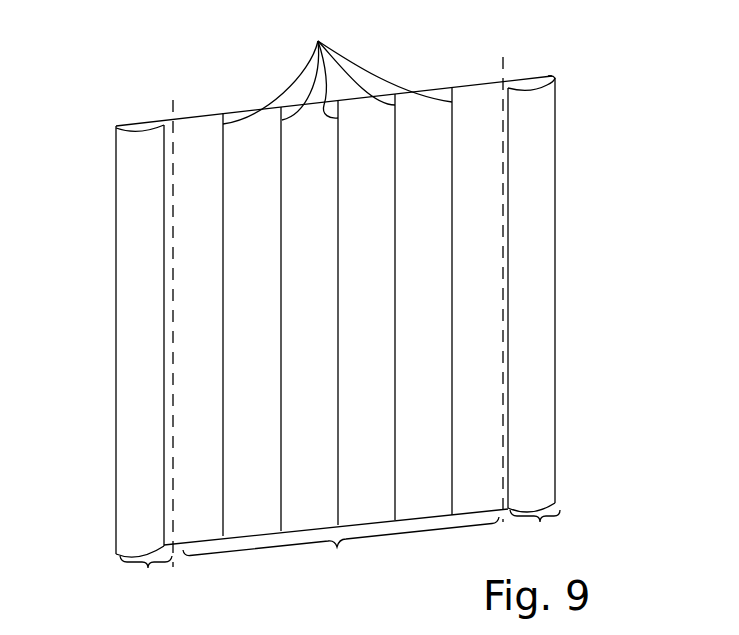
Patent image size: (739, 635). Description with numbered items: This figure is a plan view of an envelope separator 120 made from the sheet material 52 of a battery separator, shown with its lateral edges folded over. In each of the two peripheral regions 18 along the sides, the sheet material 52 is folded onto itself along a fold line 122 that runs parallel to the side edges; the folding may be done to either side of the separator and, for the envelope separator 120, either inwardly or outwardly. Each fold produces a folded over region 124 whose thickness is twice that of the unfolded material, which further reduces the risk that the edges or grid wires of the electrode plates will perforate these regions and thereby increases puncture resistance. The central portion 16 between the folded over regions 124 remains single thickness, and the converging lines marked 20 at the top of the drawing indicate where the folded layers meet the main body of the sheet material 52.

The envelope separator 120 is at (597, 108).
The fold line 122 is at (116, 331).
The folded over region 124 is at (145, 197).
The fold lines 20 is at (337, 70).
The sheet material 52 is at (268, 392).
The web portion 16 is at (341, 546).
The peripheral region 18 is at (340, 549).